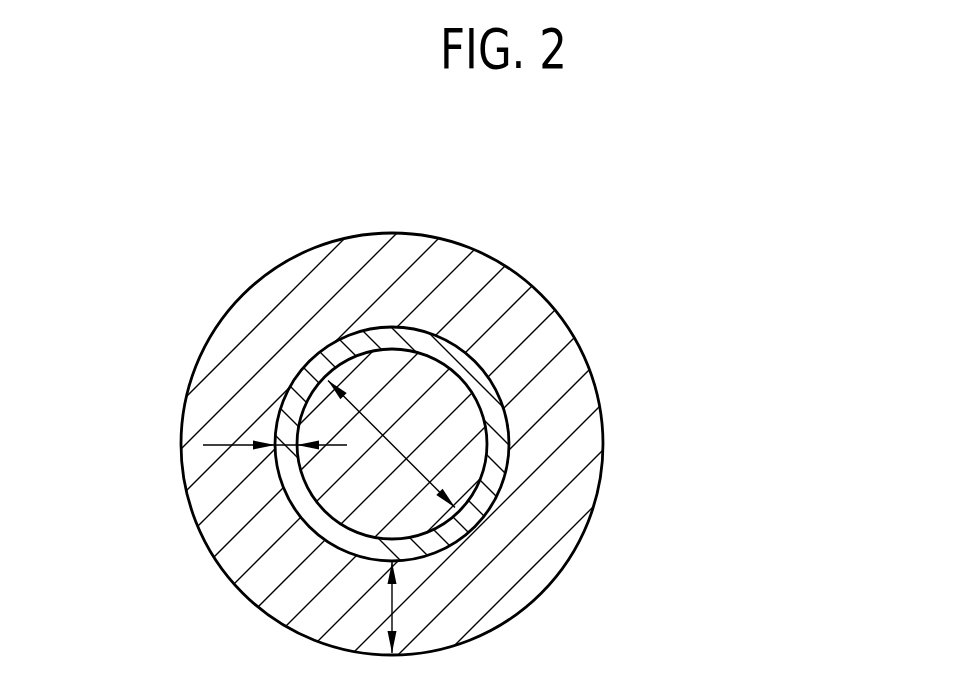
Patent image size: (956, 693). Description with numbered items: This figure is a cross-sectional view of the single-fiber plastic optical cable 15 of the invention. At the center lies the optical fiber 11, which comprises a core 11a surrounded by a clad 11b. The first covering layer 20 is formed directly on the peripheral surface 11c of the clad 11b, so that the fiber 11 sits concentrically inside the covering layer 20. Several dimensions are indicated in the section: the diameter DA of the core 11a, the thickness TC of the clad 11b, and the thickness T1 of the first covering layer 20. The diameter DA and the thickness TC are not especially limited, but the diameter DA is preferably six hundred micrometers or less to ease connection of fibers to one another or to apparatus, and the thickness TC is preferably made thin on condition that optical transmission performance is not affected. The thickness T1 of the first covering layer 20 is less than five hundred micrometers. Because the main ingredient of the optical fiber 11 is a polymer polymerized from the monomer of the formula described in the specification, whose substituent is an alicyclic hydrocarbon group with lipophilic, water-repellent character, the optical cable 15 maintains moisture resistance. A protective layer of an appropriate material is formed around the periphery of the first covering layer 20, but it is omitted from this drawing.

The single-fiber optical cable 15 is at (478, 346).
The first covering layer 20 is at (388, 255).
The optical fiber 11 is at (478, 346).
The core 11a is at (470, 390).
The clad 11b is at (490, 492).
The peripheral surface 11c is at (280, 481).
The thickness of the clad TC is at (275, 426).
The diameter of the core DA is at (391, 444).
The thickness of the first covering layer T1 is at (416, 607).